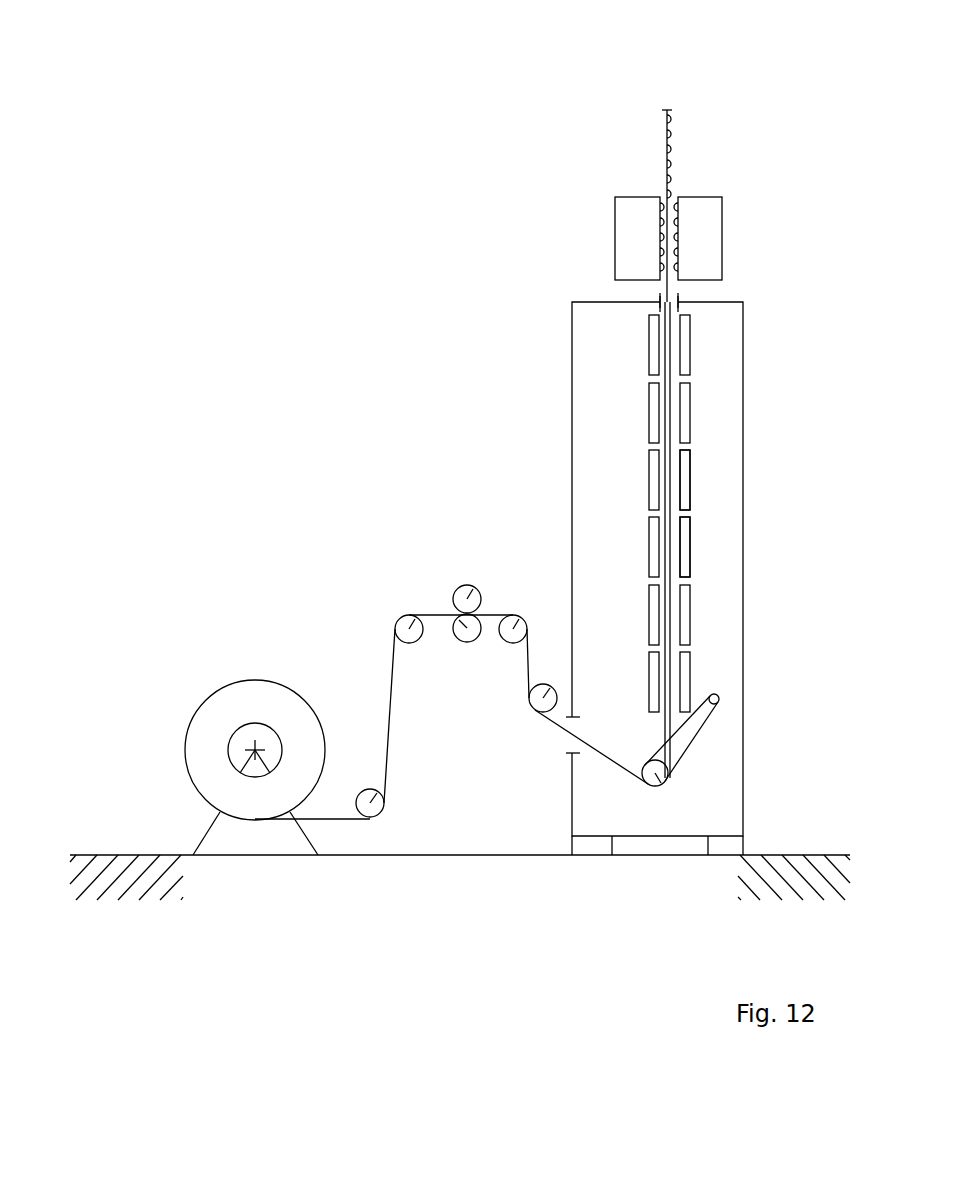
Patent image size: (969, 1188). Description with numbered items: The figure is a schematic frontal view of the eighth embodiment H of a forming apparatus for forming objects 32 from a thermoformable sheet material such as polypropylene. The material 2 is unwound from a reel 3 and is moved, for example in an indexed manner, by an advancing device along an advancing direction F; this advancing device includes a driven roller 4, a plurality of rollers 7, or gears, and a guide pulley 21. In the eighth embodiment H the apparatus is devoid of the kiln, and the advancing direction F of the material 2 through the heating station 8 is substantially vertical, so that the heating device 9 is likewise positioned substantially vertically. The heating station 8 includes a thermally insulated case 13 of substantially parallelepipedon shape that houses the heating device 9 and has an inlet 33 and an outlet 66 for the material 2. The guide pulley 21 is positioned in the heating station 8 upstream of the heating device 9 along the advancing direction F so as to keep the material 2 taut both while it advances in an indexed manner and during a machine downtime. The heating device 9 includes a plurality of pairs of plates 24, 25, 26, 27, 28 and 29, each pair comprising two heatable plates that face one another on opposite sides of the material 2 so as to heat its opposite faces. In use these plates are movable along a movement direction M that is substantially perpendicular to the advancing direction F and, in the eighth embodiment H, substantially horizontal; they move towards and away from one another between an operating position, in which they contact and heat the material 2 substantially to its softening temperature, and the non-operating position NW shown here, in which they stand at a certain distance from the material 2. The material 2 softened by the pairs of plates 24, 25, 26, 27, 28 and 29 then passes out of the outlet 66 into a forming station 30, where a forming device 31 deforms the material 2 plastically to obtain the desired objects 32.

The material 2 is at (393, 658).
The reel 3 is at (220, 712).
The driven roller 4 is at (466, 590).
The rollers 7 is at (380, 790).
The heating station 8 is at (696, 550).
The heating device 9 is at (706, 484).
The thermally insulated case 13 is at (743, 424).
The guide pulley 21 is at (658, 785).
The pair of plates 24 is at (633, 683).
The pair of plates 25 is at (633, 616).
The pair of plates 26 is at (633, 549).
The pair of plates 27 is at (633, 482).
The pair of plates 28 is at (633, 415).
The pair of plates 29 is at (633, 348).
The forming station 30 is at (685, 214).
The forming device 31 is at (637, 197).
The objects 32 is at (670, 120).
The inlet 33 is at (580, 722).
The outlet 66 is at (662, 292).
The eighth embodiment H is at (352, 92).
The movement direction M is at (500, 352).
The advancing direction F is at (727, 379).
The non-operating position NW is at (707, 549).